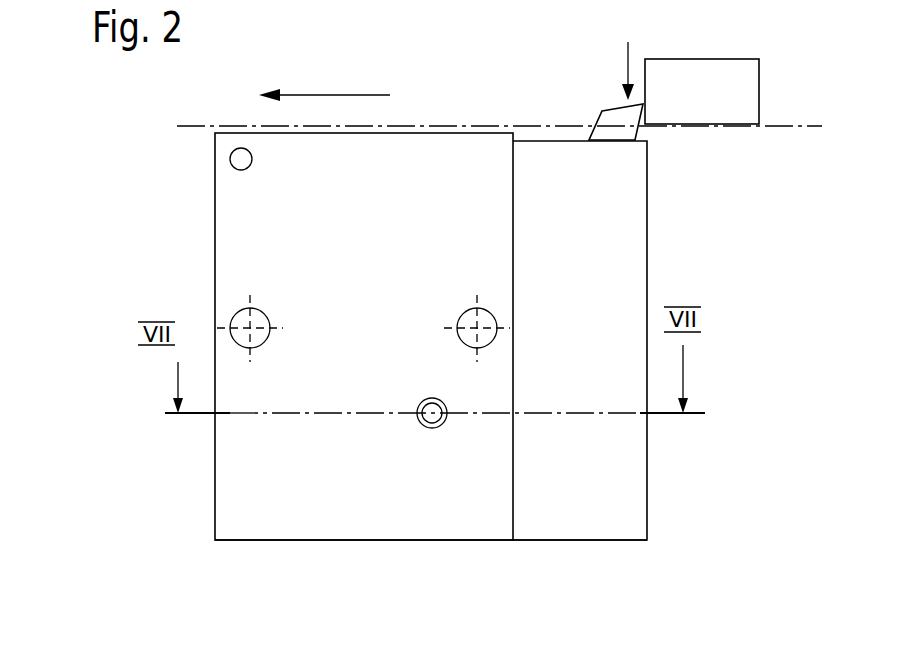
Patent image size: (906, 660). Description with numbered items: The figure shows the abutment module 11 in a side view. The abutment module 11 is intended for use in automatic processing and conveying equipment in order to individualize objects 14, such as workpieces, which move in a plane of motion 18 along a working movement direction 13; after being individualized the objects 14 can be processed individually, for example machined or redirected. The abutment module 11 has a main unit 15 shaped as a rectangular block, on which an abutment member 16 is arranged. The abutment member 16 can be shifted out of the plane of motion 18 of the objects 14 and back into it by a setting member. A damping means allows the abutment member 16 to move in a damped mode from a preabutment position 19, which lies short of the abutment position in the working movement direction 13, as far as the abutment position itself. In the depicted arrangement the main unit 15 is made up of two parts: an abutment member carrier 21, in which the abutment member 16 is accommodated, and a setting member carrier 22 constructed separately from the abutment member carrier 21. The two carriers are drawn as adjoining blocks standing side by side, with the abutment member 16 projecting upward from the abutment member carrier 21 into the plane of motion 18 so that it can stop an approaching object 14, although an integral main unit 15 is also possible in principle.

The abutment module 11 is at (388, 362).
The working movement direction 13 is at (327, 95).
The object 14 is at (677, 73).
The main unit 15 is at (411, 548).
The abutment member 16 is at (625, 130).
The plane of motion 18 is at (423, 126).
The preabutment position 19 is at (629, 51).
The abutment member carrier 21 is at (628, 483).
The setting member carrier 22 is at (272, 515).